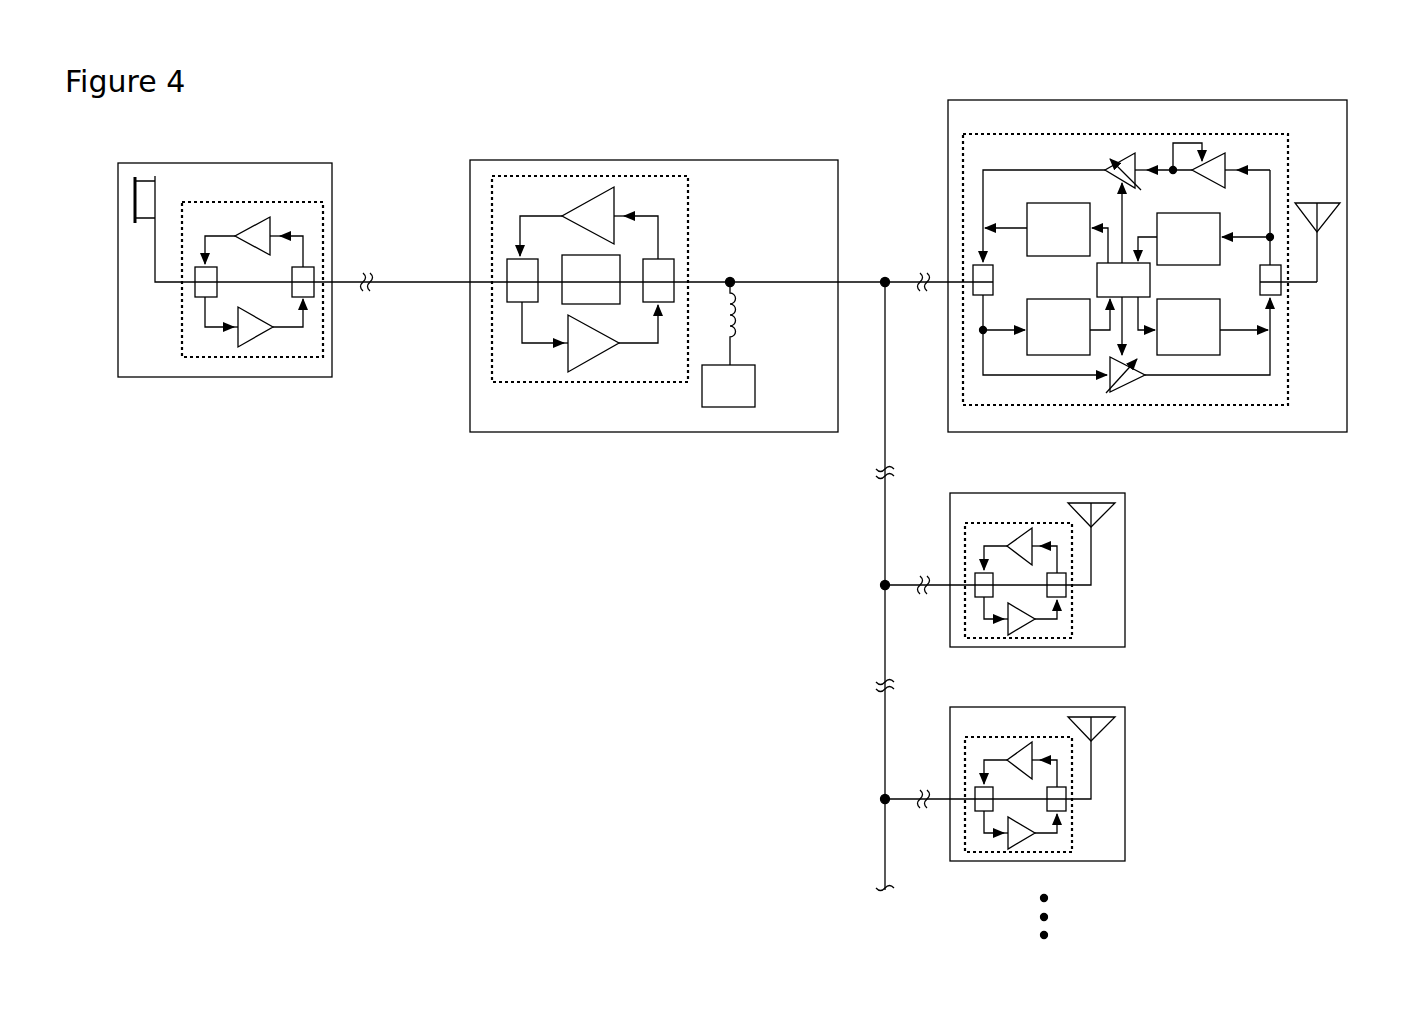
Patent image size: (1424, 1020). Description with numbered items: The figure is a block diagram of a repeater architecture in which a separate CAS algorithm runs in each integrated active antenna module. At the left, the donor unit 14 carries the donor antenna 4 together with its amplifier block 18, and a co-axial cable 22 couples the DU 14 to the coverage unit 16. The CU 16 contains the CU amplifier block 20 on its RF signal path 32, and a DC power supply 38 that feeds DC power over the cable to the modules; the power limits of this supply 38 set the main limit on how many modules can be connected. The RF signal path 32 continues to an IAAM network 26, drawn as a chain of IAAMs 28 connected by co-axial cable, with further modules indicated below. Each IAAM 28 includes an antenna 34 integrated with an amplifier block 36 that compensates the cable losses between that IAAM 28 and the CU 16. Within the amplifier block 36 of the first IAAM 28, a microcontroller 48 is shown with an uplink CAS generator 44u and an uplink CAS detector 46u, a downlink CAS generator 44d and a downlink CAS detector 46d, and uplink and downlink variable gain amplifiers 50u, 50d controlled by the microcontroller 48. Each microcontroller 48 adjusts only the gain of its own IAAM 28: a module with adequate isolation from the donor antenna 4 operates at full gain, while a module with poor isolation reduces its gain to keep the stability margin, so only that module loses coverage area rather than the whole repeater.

The donor antenna 4 is at (157, 197).
The donor unit 14 is at (225, 163).
The coverage unit 16 is at (752, 160).
The duplexer and amplifier circuit 18 is at (245, 202).
The CU amplifier block 20 is at (688, 208).
The coaxial cable 22 is at (342, 282).
The IAAM network 26 is at (1327, 836).
The integrated active antenna module 28 is at (1347, 296).
The RF signal path 32 is at (763, 282).
The antenna 34 is at (1323, 214).
The amplifier block 36 is at (1288, 353).
The DC power supply 38 is at (755, 386).
The uplink CAS generator 44u is at (1060, 203).
The downlink CAS generator 44d is at (1207, 355).
The uplink CAS detector 46u is at (1203, 213).
The downlink CAS detector 46d is at (1049, 355).
The microcontroller 48 is at (1150, 285).
The uplink variable gain amplifier 50u is at (1132, 156).
The downlink variable gain amplifier 50d is at (1138, 385).